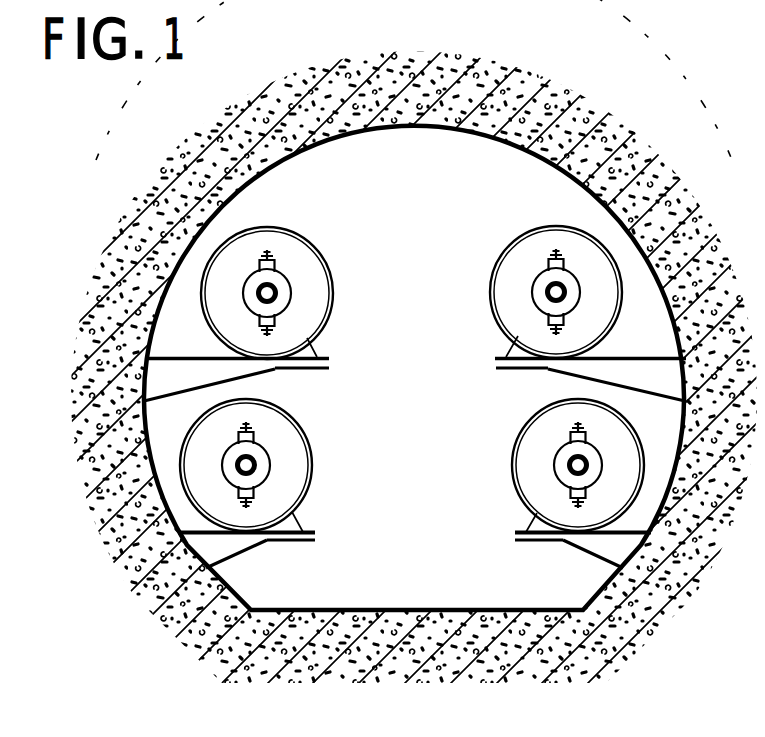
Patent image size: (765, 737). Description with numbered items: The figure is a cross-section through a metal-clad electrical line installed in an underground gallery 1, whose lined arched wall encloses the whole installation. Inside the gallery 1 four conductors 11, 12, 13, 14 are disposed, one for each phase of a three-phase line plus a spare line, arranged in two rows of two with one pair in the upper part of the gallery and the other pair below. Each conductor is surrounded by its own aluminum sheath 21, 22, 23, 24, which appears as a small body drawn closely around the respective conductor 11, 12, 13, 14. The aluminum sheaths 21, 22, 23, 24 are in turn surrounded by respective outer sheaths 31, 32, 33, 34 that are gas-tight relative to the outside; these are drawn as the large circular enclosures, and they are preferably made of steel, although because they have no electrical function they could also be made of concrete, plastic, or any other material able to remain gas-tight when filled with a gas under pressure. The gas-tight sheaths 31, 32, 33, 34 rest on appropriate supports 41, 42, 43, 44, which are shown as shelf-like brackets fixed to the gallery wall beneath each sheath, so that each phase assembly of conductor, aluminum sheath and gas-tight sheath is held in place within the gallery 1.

The underground gallery 1 is at (433, 126).
The conductor 11 is at (278, 297).
The conductor 12 is at (257, 468).
The conductor 13 is at (567, 468).
The conductor 14 is at (545, 291).
The aluminum sheath 21 is at (288, 283).
The aluminum sheath 22 is at (270, 458).
The aluminum sheath 23 is at (555, 457).
The aluminum sheath 24 is at (535, 278).
The gas-tight sheath 31 is at (313, 245).
The gas-tight sheath 32 is at (307, 438).
The gas-tight sheath 33 is at (523, 428).
The gas-tight sheath 34 is at (522, 235).
The support 41 is at (257, 370).
The support 42 is at (241, 543).
The support 43 is at (590, 543).
The support 44 is at (562, 369).